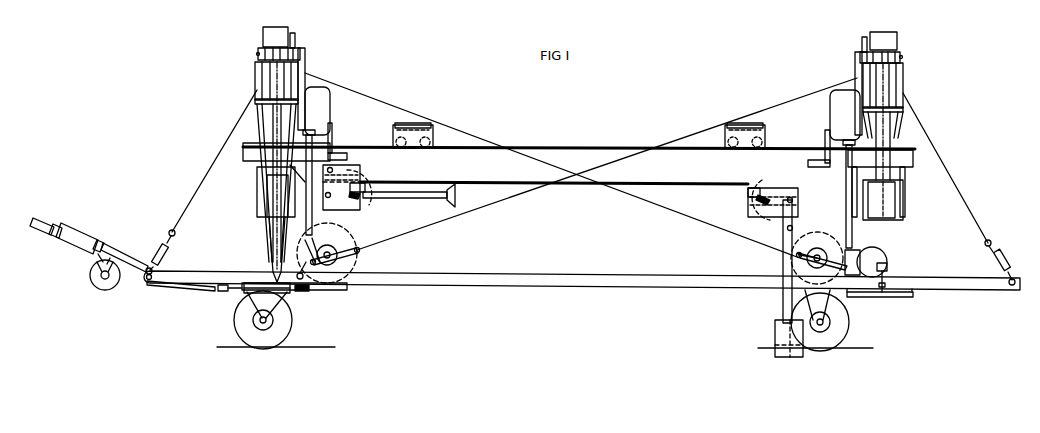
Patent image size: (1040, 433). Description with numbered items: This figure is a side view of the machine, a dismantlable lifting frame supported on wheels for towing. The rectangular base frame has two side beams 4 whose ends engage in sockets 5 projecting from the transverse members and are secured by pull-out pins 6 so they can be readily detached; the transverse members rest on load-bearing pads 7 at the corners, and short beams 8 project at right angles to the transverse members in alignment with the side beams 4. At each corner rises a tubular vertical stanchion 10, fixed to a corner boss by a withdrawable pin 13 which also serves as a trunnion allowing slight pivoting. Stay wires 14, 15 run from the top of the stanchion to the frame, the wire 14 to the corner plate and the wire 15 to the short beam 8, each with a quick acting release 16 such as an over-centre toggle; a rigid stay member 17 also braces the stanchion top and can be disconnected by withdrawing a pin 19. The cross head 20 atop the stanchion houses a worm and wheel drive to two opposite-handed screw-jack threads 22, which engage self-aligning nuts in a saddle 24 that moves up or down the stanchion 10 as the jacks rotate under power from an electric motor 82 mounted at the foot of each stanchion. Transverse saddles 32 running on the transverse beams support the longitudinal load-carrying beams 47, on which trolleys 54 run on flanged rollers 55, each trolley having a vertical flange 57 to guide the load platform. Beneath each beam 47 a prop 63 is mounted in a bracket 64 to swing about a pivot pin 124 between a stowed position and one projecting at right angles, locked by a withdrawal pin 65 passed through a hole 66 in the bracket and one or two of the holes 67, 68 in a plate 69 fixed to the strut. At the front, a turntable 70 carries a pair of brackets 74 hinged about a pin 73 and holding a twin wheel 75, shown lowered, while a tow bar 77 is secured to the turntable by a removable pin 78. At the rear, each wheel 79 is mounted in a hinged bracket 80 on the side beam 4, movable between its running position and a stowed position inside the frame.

The side beam 4 is at (483, 278).
The socket 5 is at (359, 251).
The pull-out pin 6 is at (310, 262).
The load-bearing pad 7 is at (307, 289).
The short beam 8 is at (192, 271).
The vertical stanchion 10 is at (270, 116).
The withdrawable pin 13 is at (887, 270).
The stay wire 14 is at (492, 146).
The stay wire 15 is at (227, 142).
The quick acting release 16 is at (818, 238).
The rigid stay member 17 is at (258, 127).
The pin 19 is at (287, 296).
The cross head 20 is at (883, 47).
The screw-jack thread 22 is at (277, 73).
The saddle 24 is at (890, 197).
The transverse saddle 32 is at (903, 203).
The longitudinal load-carrying beam 47 is at (580, 152).
The trolley 54 is at (423, 130).
The flanged roller 55 is at (417, 148).
The vertical flange 57 is at (412, 123).
The prop 63 is at (437, 200).
The bracket 64 is at (367, 188).
The withdrawal pin 65 is at (357, 193).
The hole 66 is at (365, 200).
The hole 67 is at (331, 168).
The hole 68 is at (792, 227).
The plate 69 is at (347, 172).
The turntable 70 is at (228, 293).
The pin 73 is at (300, 293).
The bracket 74 is at (260, 307).
The twin wheel 75 is at (240, 334).
The tow bar 77 is at (128, 262).
The removable pin 78 is at (215, 290).
The rear wheel 79 is at (849, 327).
The bracket 80 is at (813, 299).
The electric motor 82 is at (857, 248).
The pivot pin 124 is at (325, 197).